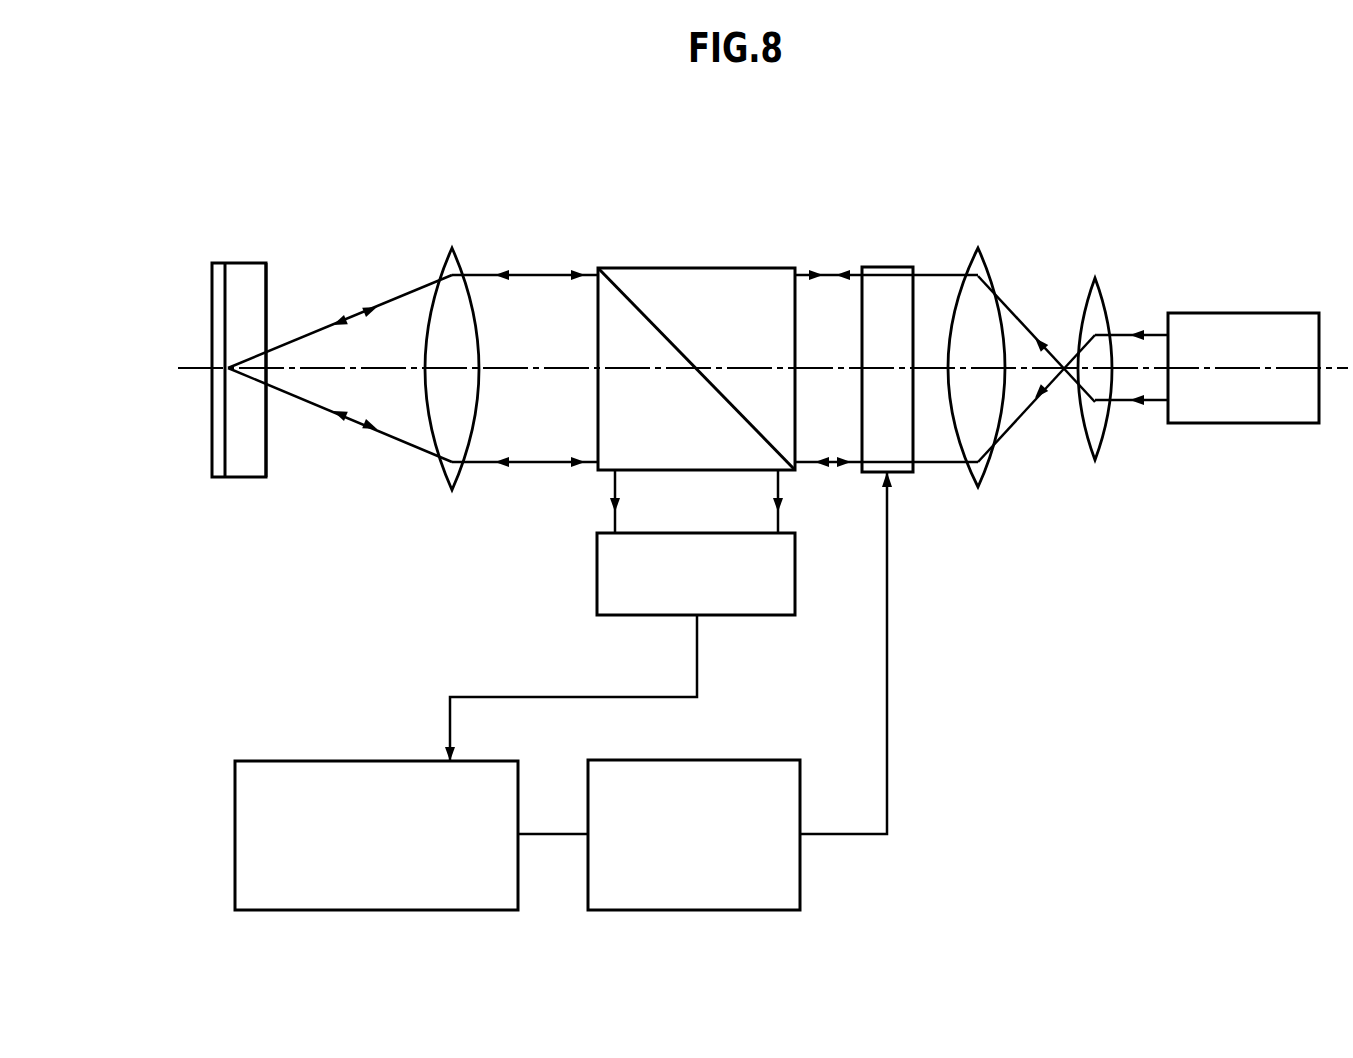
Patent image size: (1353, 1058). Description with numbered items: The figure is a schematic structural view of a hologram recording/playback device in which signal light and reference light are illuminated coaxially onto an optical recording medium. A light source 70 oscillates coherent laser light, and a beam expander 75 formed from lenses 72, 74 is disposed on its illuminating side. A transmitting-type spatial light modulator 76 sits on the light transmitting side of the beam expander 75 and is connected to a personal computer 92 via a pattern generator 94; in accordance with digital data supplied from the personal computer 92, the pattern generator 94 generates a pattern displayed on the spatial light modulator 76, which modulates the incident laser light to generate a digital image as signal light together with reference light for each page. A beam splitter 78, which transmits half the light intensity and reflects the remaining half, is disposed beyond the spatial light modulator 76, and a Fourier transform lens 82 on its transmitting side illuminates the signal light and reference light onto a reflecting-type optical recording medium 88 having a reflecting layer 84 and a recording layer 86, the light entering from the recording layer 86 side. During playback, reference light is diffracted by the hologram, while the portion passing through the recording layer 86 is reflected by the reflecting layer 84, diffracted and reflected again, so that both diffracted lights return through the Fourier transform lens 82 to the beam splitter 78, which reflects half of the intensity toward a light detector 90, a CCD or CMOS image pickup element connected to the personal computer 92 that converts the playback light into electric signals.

The light source 70 is at (1248, 423).
The lens 72 is at (1094, 455).
The lens 74 is at (977, 487).
The beam expander 75 is at (1031, 357).
The spatial light modulator 76 is at (893, 267).
The beam splitter 78 is at (758, 268).
The Fourier transform lens 82 is at (452, 248).
The reflecting layer 84 is at (222, 268).
The recording layer 86 is at (255, 268).
The optical recording medium 88 is at (239, 312).
The light detector 90 is at (780, 615).
The personal computer 92 is at (267, 761).
The pattern generator 94 is at (775, 760).